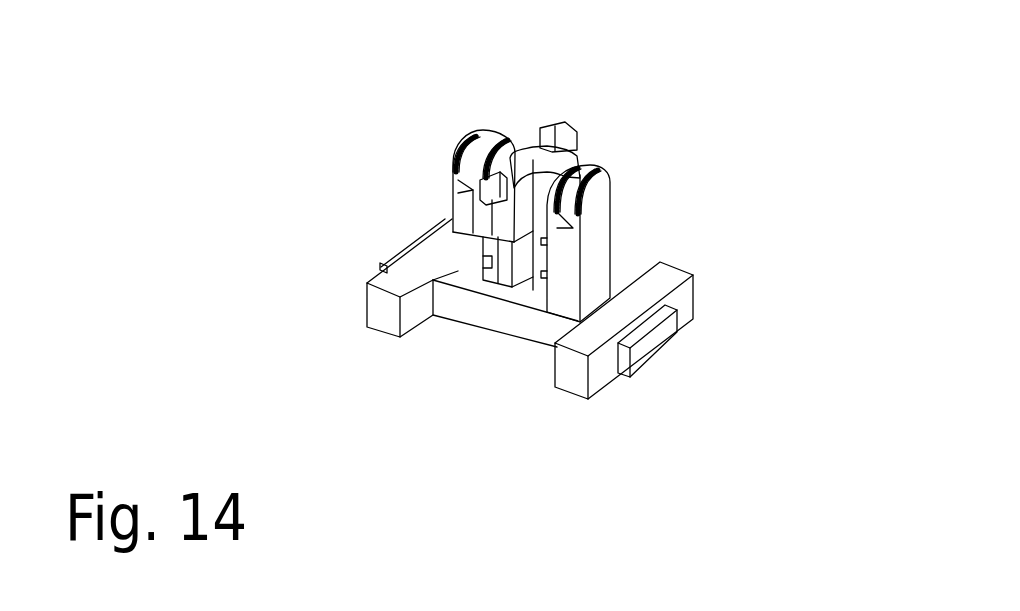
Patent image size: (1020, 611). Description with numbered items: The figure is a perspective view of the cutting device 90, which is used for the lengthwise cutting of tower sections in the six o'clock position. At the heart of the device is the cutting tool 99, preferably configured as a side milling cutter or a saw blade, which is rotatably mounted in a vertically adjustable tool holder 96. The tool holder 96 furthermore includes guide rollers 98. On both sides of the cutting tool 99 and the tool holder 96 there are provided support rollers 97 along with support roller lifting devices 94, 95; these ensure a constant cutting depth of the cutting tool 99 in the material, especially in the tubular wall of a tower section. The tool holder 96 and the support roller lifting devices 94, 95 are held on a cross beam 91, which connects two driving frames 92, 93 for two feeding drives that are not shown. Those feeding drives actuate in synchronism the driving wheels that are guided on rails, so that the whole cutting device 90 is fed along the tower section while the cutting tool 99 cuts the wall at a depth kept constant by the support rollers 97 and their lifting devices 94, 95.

The cutting device 90 is at (733, 97).
The cross beam 91 is at (518, 328).
The driving frame 92 is at (597, 382).
The driving frame 93 is at (383, 310).
The support roller lifting device 94 is at (598, 267).
The support roller lifting device 95 is at (463, 235).
The tool holder 96 is at (488, 218).
The support rollers 97 is at (473, 143).
The guide rollers 98 is at (492, 182).
The cutting tool 99 is at (530, 157).